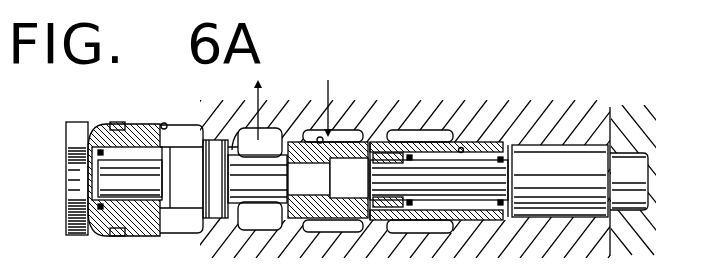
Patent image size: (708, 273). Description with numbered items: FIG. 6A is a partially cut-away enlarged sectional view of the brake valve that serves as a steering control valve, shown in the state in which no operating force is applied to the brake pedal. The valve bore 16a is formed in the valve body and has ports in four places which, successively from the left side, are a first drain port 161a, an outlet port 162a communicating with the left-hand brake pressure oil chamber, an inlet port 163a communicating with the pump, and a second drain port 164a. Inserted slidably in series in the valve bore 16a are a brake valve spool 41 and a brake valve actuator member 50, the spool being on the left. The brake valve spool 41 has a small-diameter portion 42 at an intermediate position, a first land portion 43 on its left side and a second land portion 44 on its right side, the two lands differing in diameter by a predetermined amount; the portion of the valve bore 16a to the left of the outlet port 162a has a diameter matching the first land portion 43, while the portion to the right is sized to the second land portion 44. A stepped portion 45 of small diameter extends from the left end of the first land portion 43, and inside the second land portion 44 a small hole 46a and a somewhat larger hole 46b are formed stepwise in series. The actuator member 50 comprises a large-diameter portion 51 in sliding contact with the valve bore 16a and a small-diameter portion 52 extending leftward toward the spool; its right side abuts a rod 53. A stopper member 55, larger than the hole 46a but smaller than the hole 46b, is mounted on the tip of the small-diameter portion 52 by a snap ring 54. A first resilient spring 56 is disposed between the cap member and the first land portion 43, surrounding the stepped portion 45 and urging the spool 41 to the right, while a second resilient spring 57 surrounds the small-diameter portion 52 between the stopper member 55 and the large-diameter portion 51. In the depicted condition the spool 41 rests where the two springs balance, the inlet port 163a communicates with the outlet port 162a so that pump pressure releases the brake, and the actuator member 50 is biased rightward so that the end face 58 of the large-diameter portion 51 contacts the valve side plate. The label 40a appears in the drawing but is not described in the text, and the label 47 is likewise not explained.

The valve bore 16a is at (503, 220).
The passage 40a is at (380, 128).
The brake valve spool 41 is at (265, 189).
The small-diameter portion 42 is at (262, 135).
The first land portion 43 is at (177, 233).
The second land portion 44 is at (317, 228).
The stepped portion 45 is at (110, 127).
The hole 46a is at (319, 137).
The hole 46b is at (461, 147).
The bearing 47 is at (215, 140).
The brake valve actuator member 50 is at (556, 140).
The large-diameter portion 51 is at (560, 193).
The small-diameter portion 52 is at (425, 173).
The rod 53 is at (623, 211).
The snap ring 54 is at (333, 178).
The stopper member 55 is at (386, 220).
The first resilient spring 56 is at (113, 232).
The second resilient spring 57 is at (492, 145).
The end face 58 is at (615, 150).
The first drain port 161a is at (164, 123).
The outlet port 162a is at (245, 128).
The inlet port 163a is at (348, 133).
The second drain port 164a is at (447, 132).